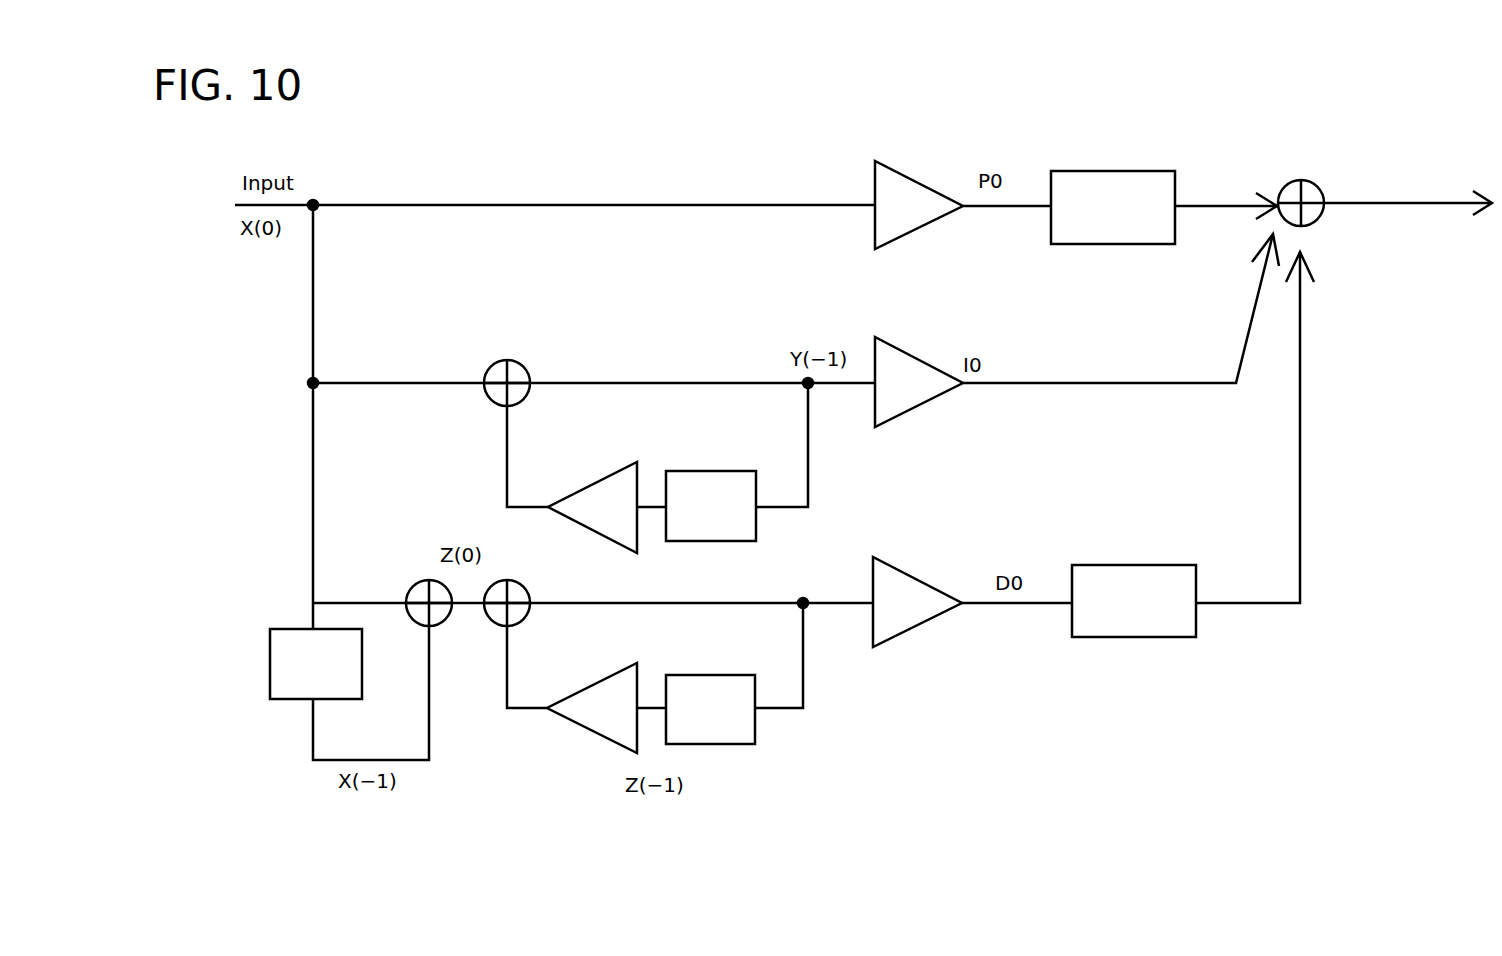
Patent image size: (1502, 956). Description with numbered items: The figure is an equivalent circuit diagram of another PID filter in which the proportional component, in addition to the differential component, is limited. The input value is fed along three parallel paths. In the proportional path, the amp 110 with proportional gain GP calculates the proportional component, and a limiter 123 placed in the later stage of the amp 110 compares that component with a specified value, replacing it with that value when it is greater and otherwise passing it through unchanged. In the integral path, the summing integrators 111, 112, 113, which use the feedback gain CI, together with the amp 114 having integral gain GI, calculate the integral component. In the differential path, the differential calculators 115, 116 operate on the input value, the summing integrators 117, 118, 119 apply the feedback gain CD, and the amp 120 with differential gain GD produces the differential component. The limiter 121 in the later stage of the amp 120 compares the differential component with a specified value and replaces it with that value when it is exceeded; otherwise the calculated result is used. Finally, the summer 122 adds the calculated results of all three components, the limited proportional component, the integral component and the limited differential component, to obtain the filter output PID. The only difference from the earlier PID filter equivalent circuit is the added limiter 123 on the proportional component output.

The amp 110 is at (937, 230).
The summing integrator 111 is at (768, 537).
The summing integrator 112 is at (558, 527).
The summing integrator 113 is at (537, 357).
The amp 114 is at (930, 410).
The differential calculator 115 is at (285, 705).
The differential calculator 116 is at (414, 580).
The summing integrator 117 is at (537, 588).
The summing integrator 118 is at (578, 752).
The summing integrator 119 is at (728, 762).
The amp 120 is at (917, 648).
The limiter 121 is at (1122, 645).
The summer 122 is at (1343, 220).
The limiter 123 is at (1112, 163).